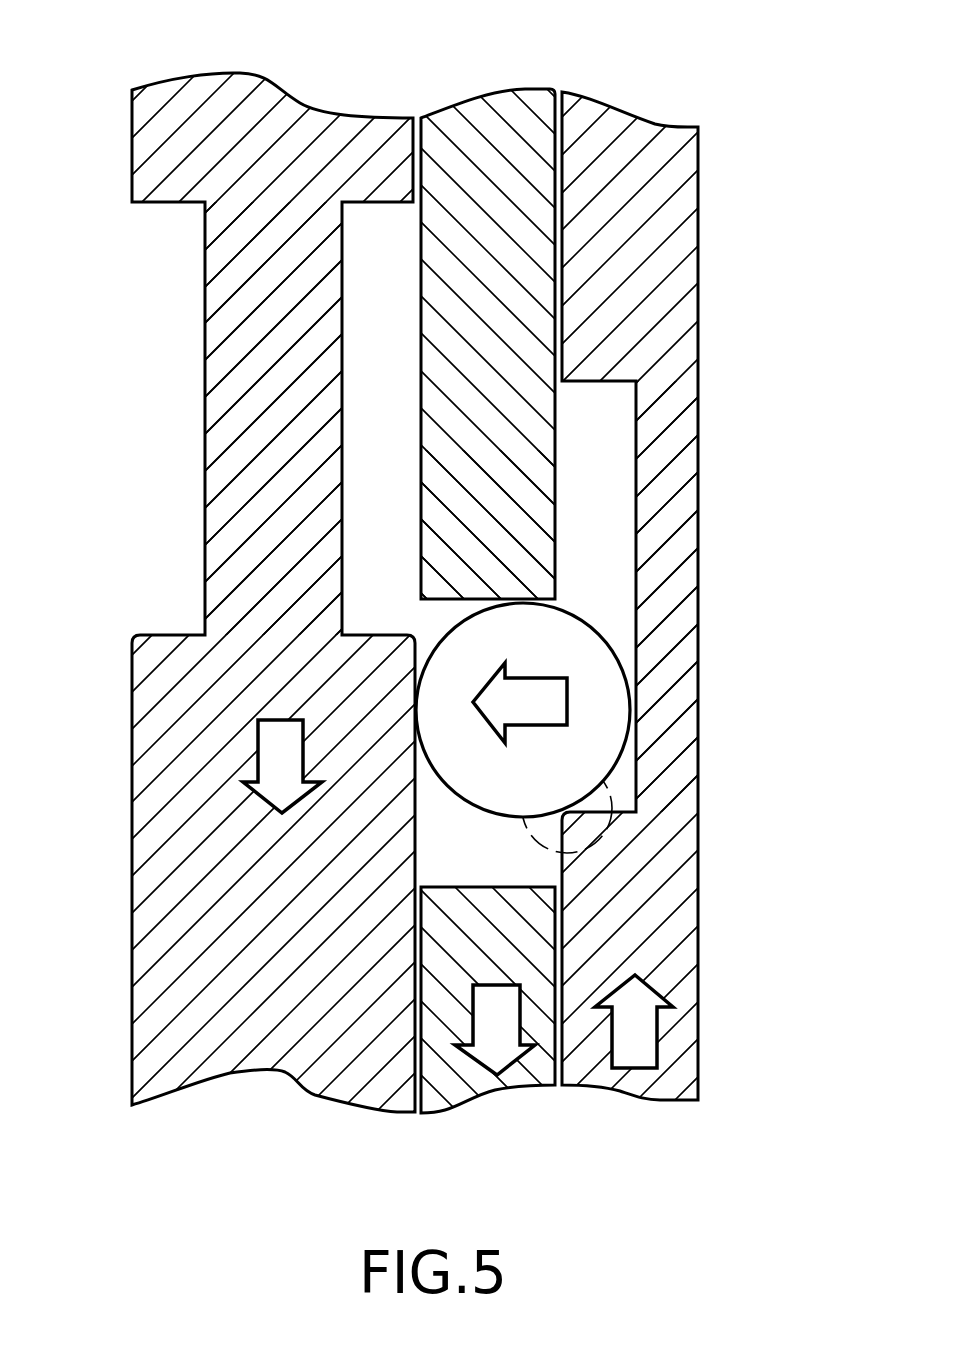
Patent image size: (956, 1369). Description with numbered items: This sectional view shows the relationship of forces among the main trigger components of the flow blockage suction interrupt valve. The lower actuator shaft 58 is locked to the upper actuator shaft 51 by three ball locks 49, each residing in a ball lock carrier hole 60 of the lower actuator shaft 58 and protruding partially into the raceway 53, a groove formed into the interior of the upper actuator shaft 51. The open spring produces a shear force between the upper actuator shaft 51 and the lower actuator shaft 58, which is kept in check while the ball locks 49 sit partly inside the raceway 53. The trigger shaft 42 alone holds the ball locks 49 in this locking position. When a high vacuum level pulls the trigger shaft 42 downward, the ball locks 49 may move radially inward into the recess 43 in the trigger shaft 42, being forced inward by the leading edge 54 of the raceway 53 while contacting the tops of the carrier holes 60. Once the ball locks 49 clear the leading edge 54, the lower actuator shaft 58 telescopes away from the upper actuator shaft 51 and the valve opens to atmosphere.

The trigger shaft 42 is at (297, 145).
The recess 43 is at (365, 441).
The ball lock 49 is at (595, 658).
The upper actuator shaft 51 is at (642, 148).
The raceway 53 is at (620, 543).
The leading edge 54 is at (583, 830).
The lower actuator shaft 58 is at (478, 135).
The ball lock carrier hole 60 is at (488, 557).